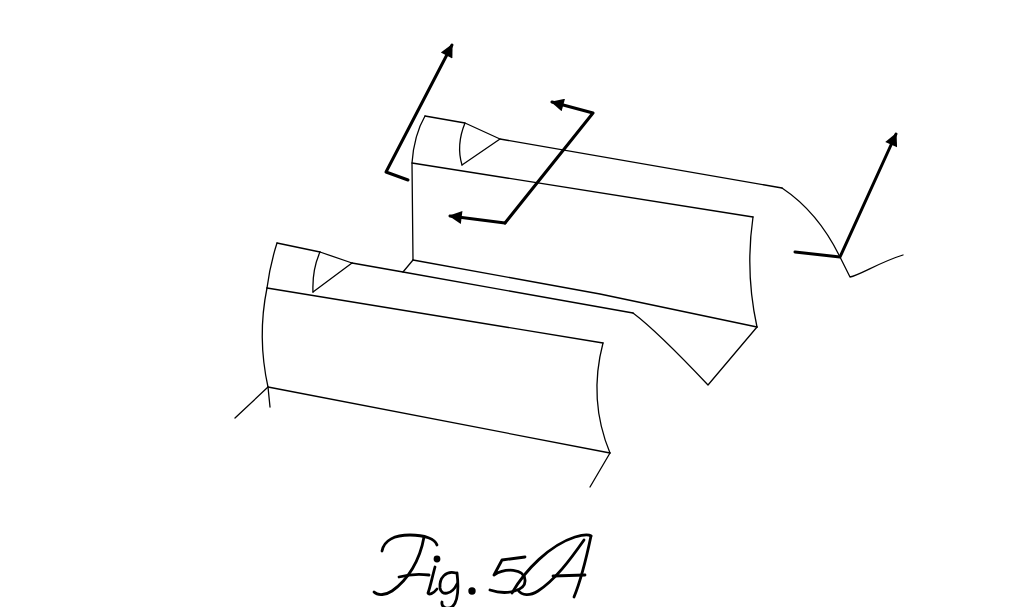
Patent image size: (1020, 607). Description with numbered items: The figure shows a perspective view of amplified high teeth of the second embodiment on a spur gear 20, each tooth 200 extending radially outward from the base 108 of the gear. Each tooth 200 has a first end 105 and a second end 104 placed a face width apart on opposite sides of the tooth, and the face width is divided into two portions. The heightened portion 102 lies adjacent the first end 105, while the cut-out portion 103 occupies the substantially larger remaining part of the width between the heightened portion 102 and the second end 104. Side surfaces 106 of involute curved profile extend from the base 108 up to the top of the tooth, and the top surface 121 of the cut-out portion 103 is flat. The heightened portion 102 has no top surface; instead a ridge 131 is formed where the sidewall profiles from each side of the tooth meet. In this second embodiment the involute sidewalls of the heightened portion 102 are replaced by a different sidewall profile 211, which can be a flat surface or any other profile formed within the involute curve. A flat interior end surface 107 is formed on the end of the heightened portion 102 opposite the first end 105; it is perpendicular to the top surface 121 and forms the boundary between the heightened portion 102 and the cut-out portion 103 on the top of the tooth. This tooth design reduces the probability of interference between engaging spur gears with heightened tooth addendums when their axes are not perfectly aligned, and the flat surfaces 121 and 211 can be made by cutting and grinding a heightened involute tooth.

The spur gear 20 is at (90, 331).
The heightened portion 102 is at (392, 127).
The tooth 200 is at (494, 122).
The ridge 131 is at (303, 243).
The sidewall profile 211 is at (292, 268).
The interior end surface 107 is at (328, 269).
The first end 105 is at (266, 336).
The base 108 is at (262, 392).
The side surfaces 106 is at (378, 362).
The top surface 121 is at (482, 307).
The second end 104 is at (630, 393).
The cut-out portion 103 is at (598, 300).